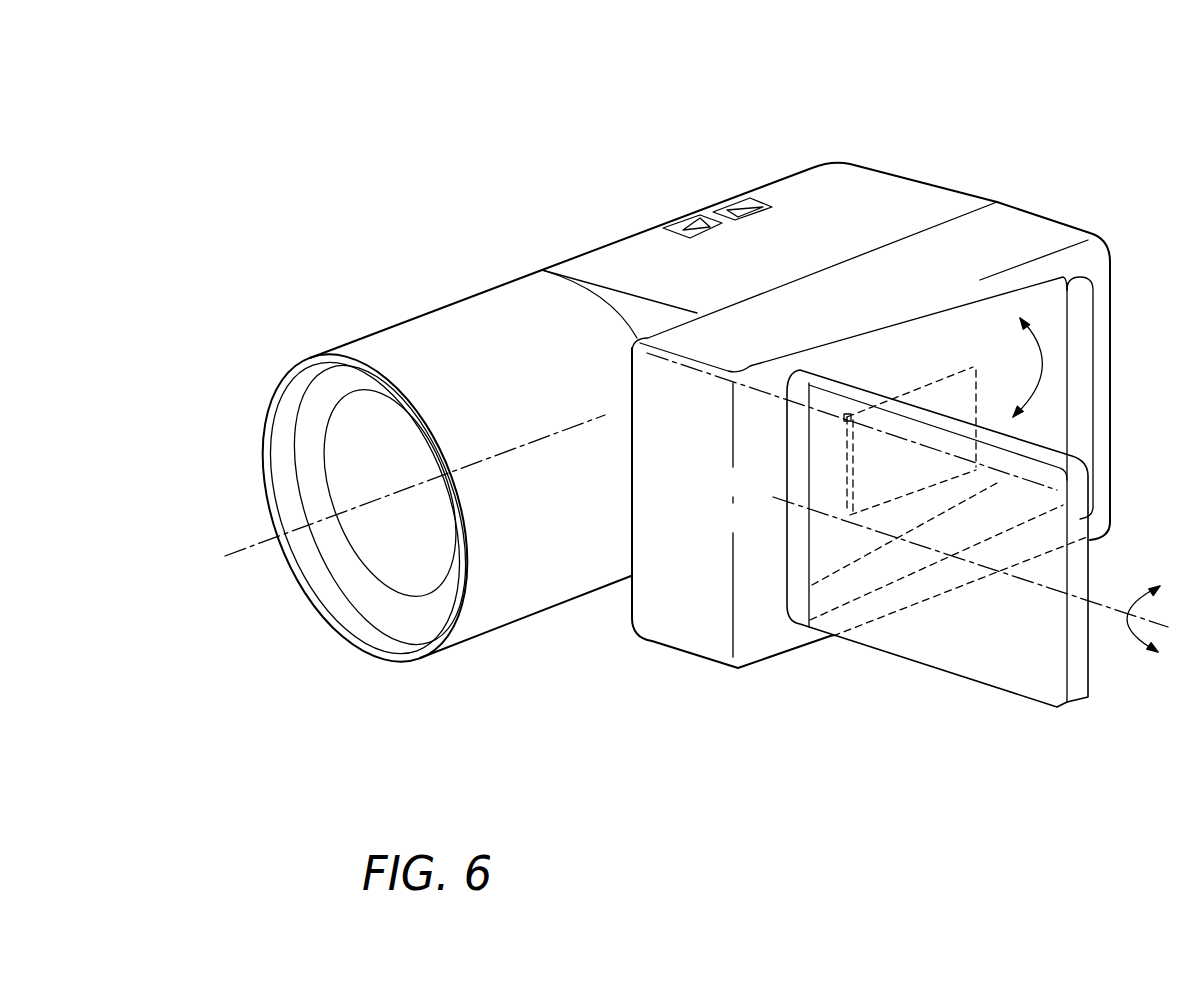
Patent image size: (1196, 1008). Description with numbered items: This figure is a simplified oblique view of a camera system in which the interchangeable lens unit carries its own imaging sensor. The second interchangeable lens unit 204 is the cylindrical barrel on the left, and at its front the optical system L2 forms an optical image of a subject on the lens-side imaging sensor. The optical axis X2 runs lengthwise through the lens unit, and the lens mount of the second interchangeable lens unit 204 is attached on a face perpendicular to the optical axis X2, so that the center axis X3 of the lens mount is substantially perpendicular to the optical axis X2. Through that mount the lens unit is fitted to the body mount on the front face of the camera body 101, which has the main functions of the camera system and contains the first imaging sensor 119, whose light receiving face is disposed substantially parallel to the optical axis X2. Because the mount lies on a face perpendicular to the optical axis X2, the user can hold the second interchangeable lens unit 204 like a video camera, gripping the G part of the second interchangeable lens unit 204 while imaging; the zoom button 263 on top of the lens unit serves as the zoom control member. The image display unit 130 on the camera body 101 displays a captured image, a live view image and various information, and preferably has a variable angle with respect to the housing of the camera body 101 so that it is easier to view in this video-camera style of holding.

The second interchangeable lens unit 204 is at (411, 305).
The optical system L2 is at (320, 412).
The optical axis X2 is at (390, 499).
The G part G is at (839, 150).
The zoom button 263 is at (740, 200).
The first imaging sensor 119 is at (972, 368).
The camera body 101 is at (1097, 204).
The image display unit 130 is at (1030, 672).
The center axis X3 is at (1030, 478).